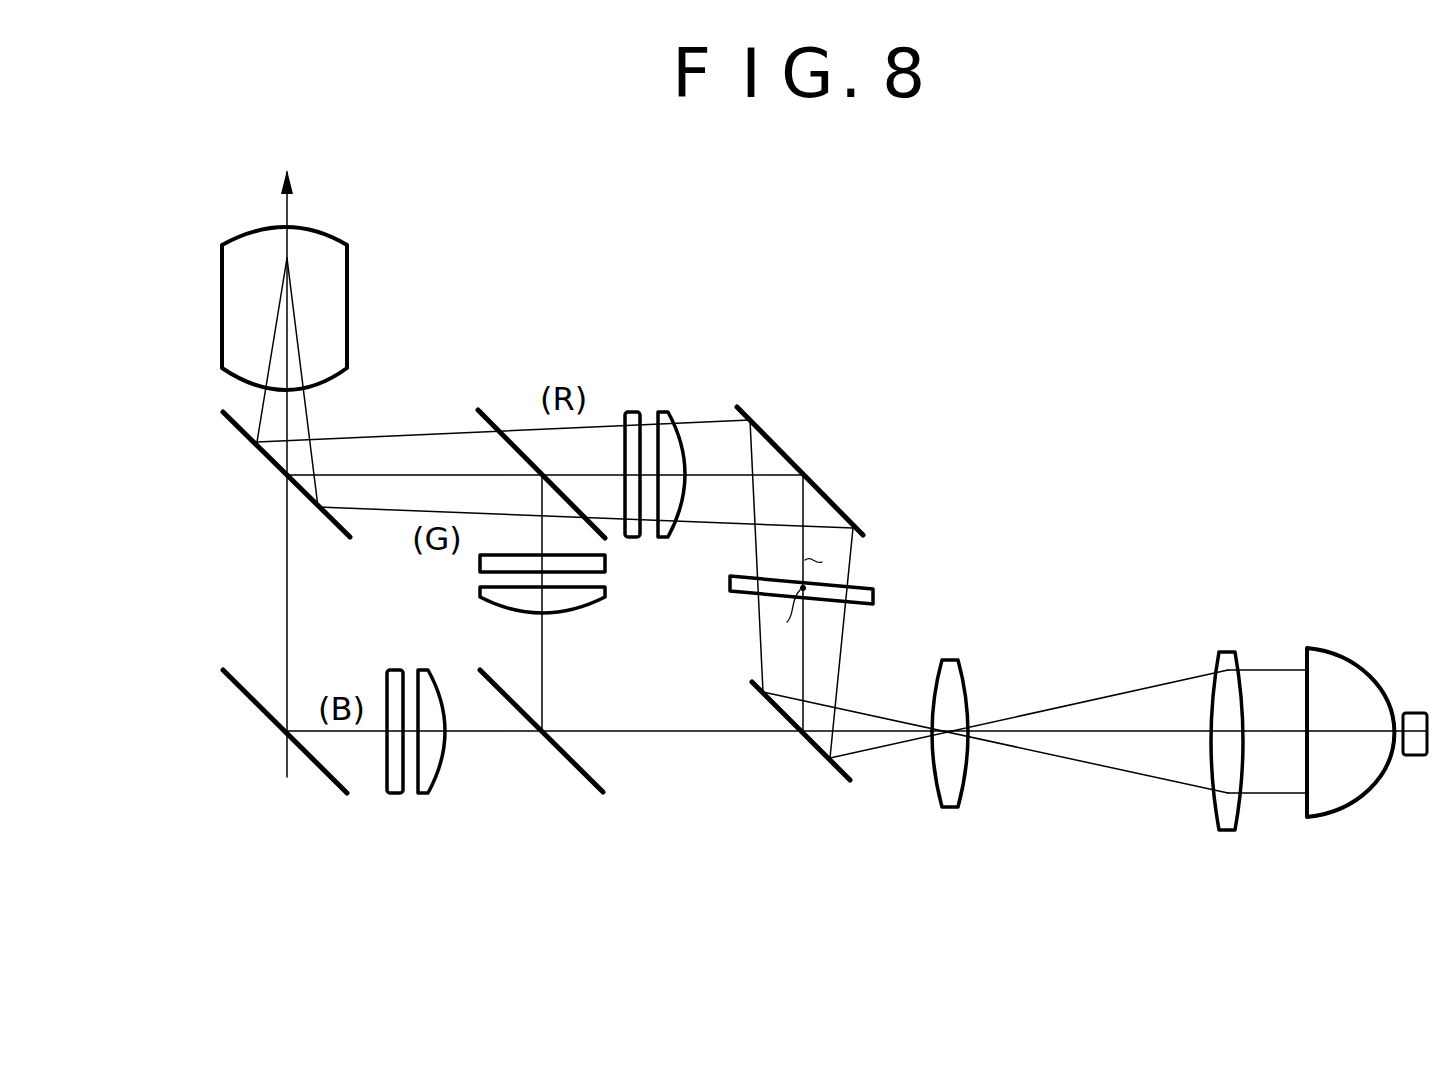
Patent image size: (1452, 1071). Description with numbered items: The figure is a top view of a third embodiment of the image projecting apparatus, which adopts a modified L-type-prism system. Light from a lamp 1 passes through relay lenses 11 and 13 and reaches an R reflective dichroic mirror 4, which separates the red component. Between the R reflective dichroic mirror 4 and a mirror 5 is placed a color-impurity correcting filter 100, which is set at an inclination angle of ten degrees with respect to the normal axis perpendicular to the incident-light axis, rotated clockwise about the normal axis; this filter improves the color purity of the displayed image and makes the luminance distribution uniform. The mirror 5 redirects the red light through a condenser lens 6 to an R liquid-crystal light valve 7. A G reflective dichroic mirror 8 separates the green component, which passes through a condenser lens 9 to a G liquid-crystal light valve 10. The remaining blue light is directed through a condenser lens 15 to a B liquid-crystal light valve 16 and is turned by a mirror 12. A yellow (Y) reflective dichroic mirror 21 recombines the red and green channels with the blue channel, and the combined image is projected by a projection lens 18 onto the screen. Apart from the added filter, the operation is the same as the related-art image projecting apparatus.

The lamp 1 is at (1375, 795).
The R reflective dichroic mirror 4 is at (805, 745).
The mirror 5 is at (823, 490).
The condenser lens 6 is at (664, 410).
The R liquid-crystal light valve 7 is at (632, 410).
The G reflective dichroic mirror 8 is at (492, 420).
The condenser lens 9 is at (606, 600).
The G liquid-crystal light valve 10 is at (606, 565).
The relay lens 11 is at (1218, 808).
The mirror 12 is at (245, 700).
The relay lens 13 is at (945, 810).
The condenser lens 15 is at (430, 795).
The B liquid-crystal light valve 16 is at (395, 795).
The projection lens 18 is at (346, 237).
The yellow (Y) reflective dichroic mirror 21 is at (232, 425).
The color-impurity correcting filter 100 is at (876, 597).